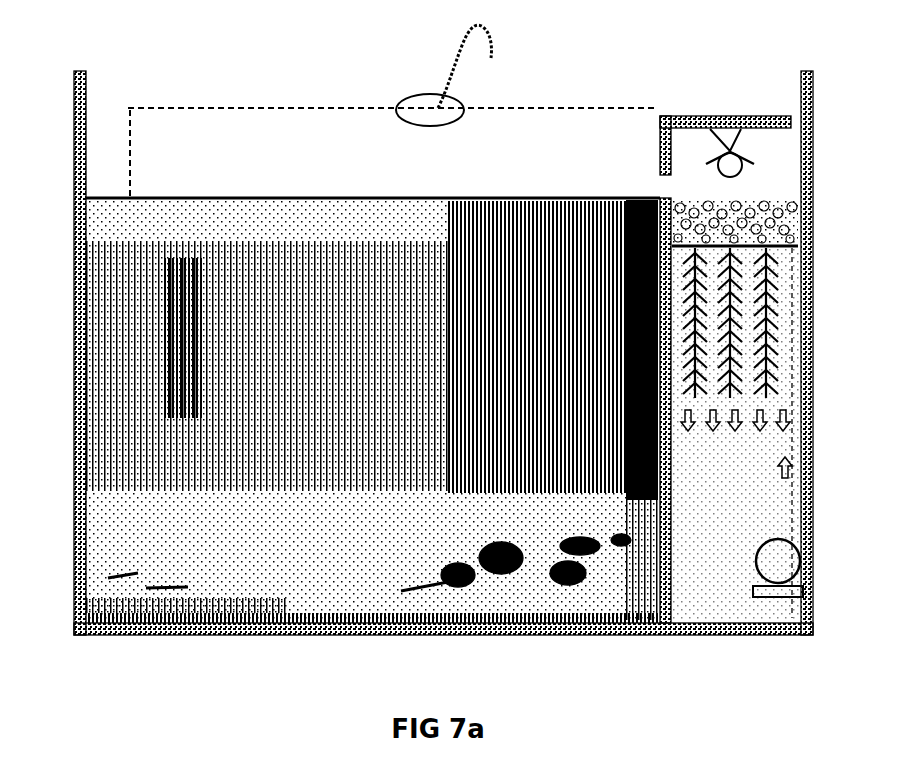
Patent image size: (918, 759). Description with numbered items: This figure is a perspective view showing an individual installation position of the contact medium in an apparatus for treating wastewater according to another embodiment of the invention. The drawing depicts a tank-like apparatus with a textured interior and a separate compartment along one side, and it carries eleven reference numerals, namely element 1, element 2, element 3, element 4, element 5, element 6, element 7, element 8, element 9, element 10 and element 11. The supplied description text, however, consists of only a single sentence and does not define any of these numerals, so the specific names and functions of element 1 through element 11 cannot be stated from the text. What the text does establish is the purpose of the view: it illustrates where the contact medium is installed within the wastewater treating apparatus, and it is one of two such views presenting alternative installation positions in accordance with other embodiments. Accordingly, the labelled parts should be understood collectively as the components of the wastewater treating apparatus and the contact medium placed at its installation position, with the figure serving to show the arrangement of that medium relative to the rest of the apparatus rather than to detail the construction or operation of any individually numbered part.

The hood / cover 1 is at (555, 98).
The filter medium 2 is at (758, 320).
The pump 3 is at (790, 555).
The base of aquarium 4 is at (432, 627).
The aquarium tank 5 is at (123, 268).
The lamp 6 is at (400, 92).
The biological filter medium 7 is at (755, 208).
The light bulb 8 is at (735, 155).
The lamp holder 9 is at (718, 140).
The filter compartment 10 is at (722, 553).
The gravel bed 11 is at (222, 575).